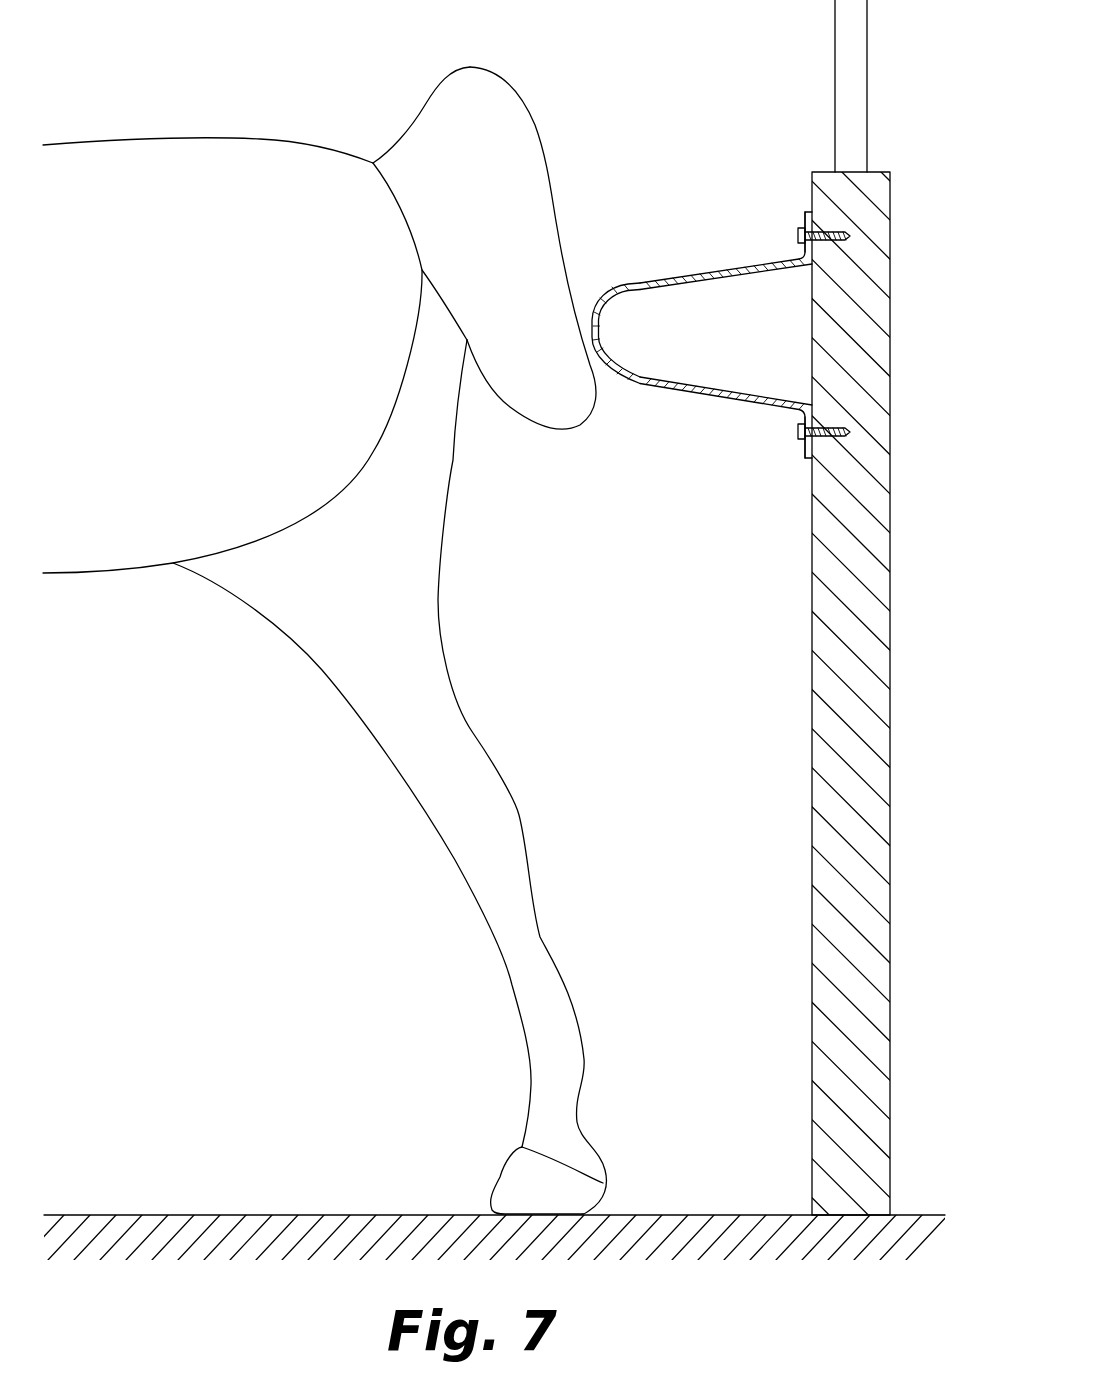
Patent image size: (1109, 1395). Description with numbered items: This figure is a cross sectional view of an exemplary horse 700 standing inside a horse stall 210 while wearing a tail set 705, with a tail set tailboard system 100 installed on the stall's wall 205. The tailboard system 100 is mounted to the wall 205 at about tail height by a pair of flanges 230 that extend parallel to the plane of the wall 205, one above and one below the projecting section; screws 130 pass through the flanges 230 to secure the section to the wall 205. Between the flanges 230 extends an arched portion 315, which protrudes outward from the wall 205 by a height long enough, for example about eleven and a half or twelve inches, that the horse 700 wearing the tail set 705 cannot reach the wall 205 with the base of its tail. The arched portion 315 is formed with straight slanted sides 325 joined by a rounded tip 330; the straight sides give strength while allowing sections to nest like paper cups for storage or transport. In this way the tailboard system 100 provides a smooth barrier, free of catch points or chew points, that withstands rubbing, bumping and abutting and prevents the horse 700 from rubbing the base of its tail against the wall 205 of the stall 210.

The tail set tailboard system 100 is at (671, 118).
The screws 130 is at (833, 232).
The wall 205 is at (812, 675).
The horse stall 210 is at (867, 100).
The flanges 230 is at (805, 222).
The arched portion 315 is at (626, 260).
The straight slanted sides 325 is at (705, 268).
The rounded tip 330 is at (600, 335).
The horse 700 is at (206, 349).
The tail set 705 is at (511, 256).